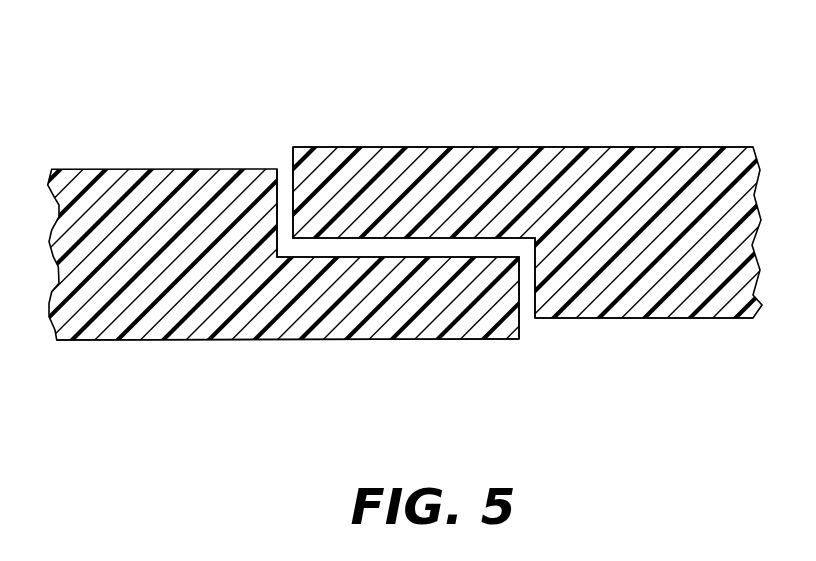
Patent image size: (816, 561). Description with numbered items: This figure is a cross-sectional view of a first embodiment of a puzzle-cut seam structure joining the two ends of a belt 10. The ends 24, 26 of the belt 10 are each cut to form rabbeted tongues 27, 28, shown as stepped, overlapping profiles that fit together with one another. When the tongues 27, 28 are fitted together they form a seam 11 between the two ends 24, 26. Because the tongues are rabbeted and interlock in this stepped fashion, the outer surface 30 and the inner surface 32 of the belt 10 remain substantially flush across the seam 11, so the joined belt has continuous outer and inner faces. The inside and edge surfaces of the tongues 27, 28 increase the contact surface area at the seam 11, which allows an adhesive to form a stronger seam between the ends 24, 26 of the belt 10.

The belt 10 is at (108, 83).
The seam 11 is at (285, 163).
The end of belt 24 is at (347, 113).
The end of belt 26 is at (459, 343).
The rabbeted tongue 27 is at (417, 147).
The rabbeted tongue 28 is at (350, 340).
The outer surface 30 is at (703, 147).
The inner surface 32 is at (707, 318).